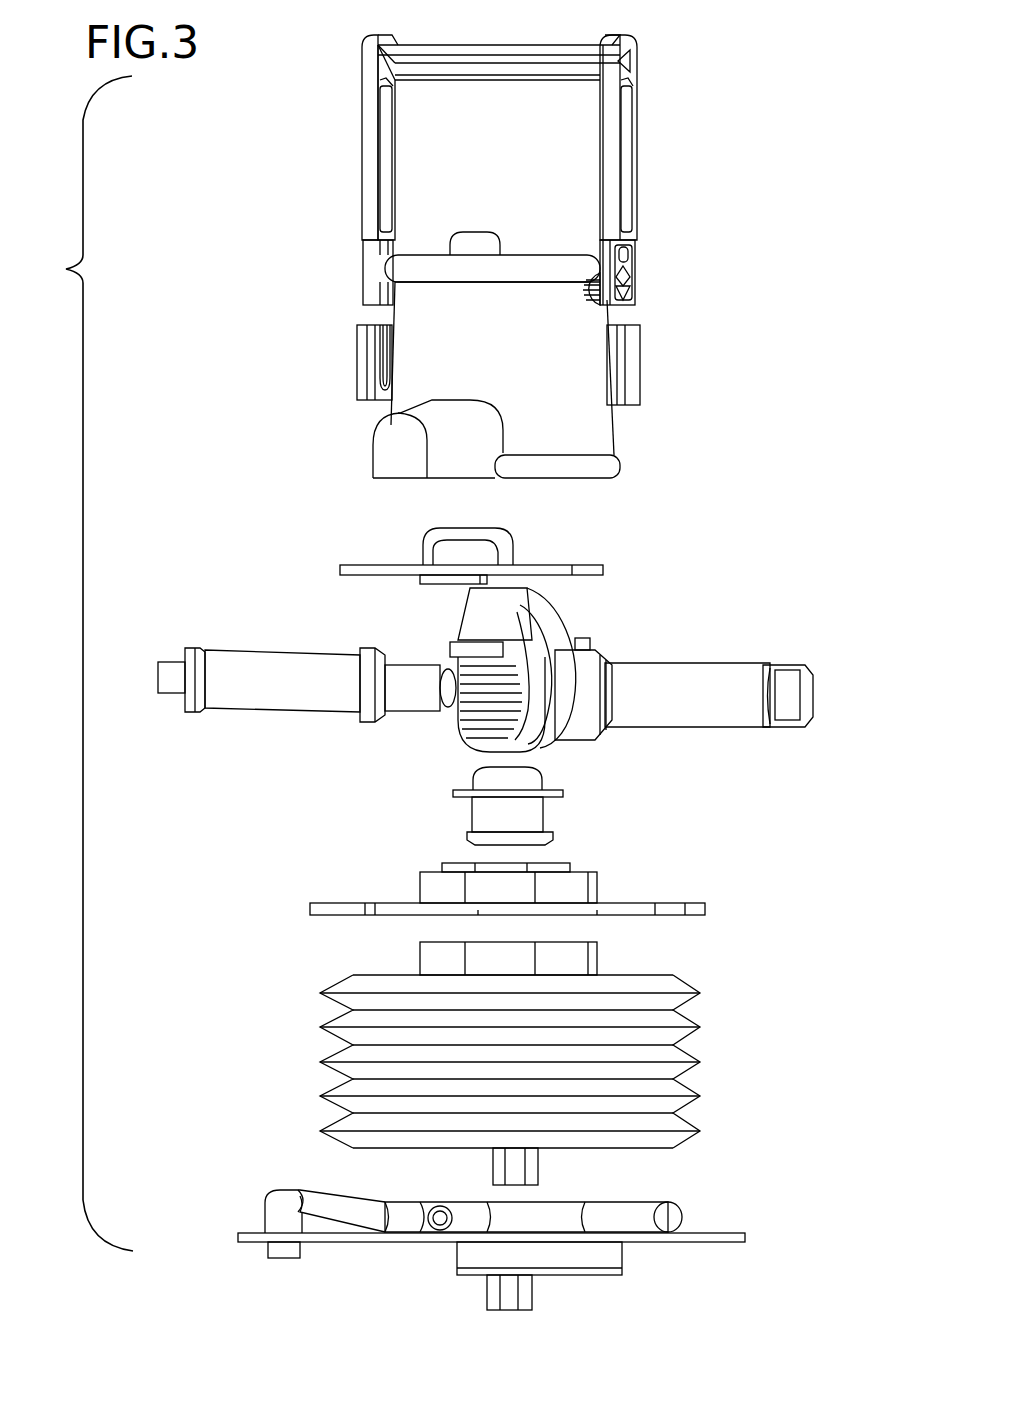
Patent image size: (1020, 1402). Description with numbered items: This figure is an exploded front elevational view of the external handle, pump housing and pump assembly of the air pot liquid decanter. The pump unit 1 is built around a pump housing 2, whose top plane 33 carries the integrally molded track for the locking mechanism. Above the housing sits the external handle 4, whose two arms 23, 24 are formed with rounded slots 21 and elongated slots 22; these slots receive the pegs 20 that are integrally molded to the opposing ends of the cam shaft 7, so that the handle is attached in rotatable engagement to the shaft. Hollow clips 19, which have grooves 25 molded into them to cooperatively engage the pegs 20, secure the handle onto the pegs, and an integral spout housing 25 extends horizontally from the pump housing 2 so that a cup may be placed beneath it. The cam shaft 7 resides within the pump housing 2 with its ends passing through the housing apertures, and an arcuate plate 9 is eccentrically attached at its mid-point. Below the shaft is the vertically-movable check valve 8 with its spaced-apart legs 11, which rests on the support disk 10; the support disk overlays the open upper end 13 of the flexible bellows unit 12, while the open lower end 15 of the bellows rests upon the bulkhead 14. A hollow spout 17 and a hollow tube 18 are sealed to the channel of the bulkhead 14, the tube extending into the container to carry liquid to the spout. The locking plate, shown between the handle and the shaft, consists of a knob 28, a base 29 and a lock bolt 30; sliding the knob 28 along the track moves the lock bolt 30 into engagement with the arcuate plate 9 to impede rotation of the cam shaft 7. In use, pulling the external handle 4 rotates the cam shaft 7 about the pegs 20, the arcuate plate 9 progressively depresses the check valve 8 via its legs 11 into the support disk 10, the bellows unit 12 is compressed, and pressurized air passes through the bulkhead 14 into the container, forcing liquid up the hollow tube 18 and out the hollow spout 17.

The pump unit 1 is at (322, 817).
The pump housing 2 is at (614, 430).
The external handle 4 is at (636, 82).
The cam shaft 7 is at (296, 650).
The vertically-movable check valve 8 is at (565, 793).
The arcuate plate 9 is at (546, 618).
The support disk 10 is at (400, 902).
The spaced-apart legs 11 is at (472, 822).
The flexible bellows unit 12 is at (330, 1058).
The open upper end 13 is at (600, 960).
The bulkhead 14 is at (720, 1244).
The open lower end 15 is at (540, 1168).
The hollow spout 17 is at (270, 1198).
The hollow tube 18 is at (535, 1292).
The hollow clips 19 is at (357, 353).
The pegs 20 is at (158, 670).
The rounded slots 21 is at (628, 279).
The elongated slots 22 is at (628, 253).
The arm 23 is at (362, 197).
The arm 24 is at (636, 140).
The grooves / integral spout housing 25 is at (372, 443).
The knob 28 is at (475, 230).
The base 29 is at (600, 562).
The lock bolt 30 is at (440, 586).
The top plane 33 is at (550, 252).